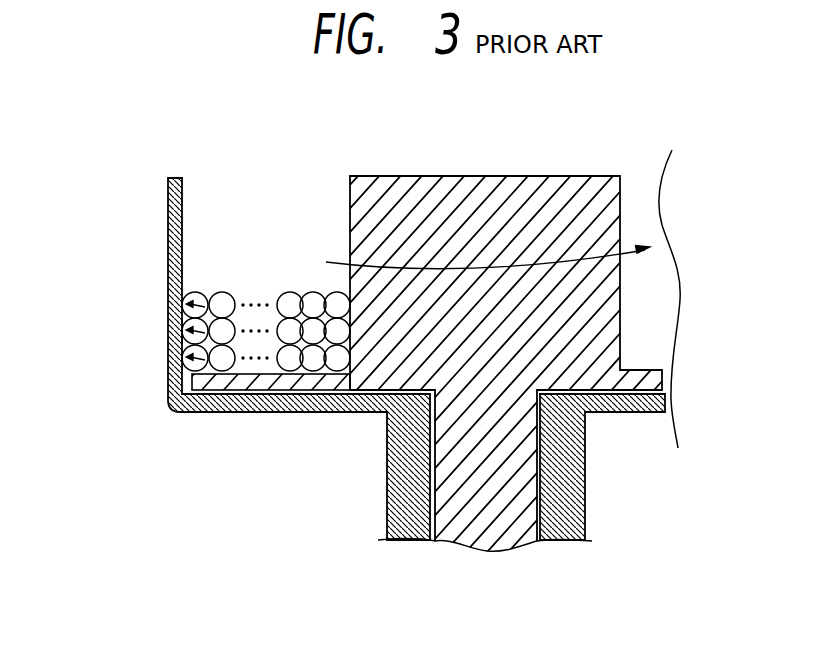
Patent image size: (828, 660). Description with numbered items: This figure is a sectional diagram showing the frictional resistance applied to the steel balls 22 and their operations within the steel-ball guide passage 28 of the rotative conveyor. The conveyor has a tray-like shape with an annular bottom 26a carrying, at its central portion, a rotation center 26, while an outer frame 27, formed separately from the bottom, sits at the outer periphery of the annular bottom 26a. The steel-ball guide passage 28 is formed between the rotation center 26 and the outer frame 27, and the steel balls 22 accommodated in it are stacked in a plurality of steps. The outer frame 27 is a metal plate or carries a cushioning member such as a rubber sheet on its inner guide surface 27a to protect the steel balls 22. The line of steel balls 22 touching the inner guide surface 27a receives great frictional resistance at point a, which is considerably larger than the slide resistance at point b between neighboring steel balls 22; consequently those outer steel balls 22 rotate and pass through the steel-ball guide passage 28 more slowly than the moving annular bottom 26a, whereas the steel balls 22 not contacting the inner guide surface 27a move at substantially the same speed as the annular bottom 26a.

The rotation center 26 is at (545, 187).
The annular bottom 26a is at (320, 380).
The outer frame 27 is at (170, 248).
The inner guide surface 27a is at (178, 212).
The steel balls 22 is at (224, 338).
The steel-ball guide passage 28 is at (256, 263).
The point of great frictional resistance a is at (180, 334).
The point of slide resistance b is at (180, 317).